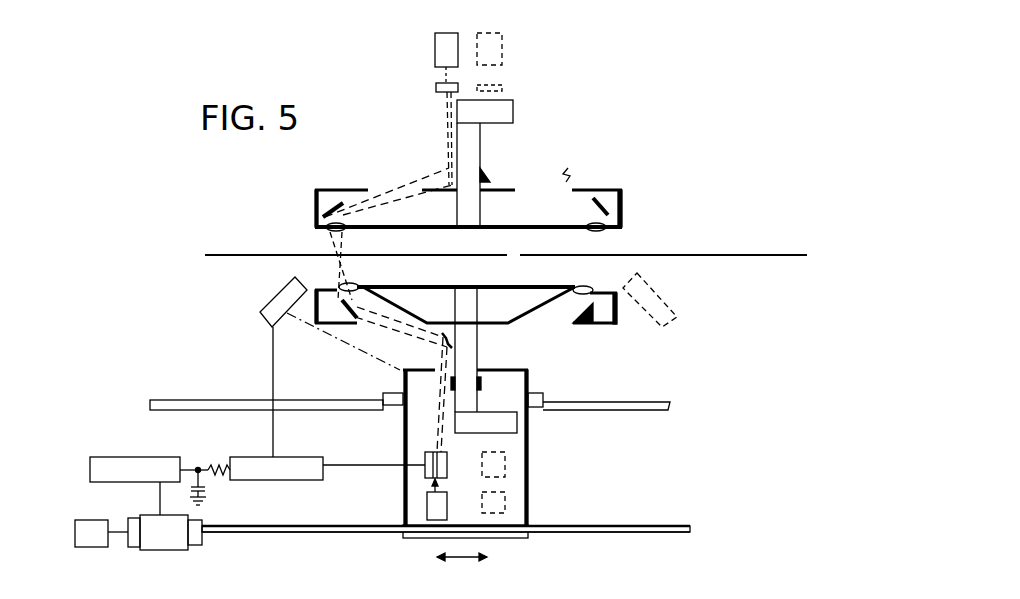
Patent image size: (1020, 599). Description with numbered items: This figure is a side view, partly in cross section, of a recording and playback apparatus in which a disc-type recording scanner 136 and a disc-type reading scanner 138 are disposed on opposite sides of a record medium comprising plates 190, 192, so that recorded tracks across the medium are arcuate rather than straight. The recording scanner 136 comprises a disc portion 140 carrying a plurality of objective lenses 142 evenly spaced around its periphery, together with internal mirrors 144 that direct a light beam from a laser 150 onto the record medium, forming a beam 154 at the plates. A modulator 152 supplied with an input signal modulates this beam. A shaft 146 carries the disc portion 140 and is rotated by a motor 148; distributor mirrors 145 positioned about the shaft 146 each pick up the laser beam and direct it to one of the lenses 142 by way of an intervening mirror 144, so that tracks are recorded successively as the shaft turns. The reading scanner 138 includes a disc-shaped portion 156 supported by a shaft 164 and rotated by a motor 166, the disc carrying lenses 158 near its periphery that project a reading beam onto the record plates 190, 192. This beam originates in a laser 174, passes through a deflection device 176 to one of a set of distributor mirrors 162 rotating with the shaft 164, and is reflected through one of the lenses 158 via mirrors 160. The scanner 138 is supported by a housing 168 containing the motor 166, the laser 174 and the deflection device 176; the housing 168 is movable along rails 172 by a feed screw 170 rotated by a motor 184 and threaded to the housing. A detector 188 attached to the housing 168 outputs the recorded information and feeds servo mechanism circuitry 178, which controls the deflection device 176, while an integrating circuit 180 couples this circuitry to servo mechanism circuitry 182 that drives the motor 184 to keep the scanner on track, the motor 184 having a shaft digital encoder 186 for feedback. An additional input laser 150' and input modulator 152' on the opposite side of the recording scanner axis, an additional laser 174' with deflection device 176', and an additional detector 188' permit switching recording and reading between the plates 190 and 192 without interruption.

The recording scanner 136 is at (610, 181).
The reading scanner 138 is at (660, 336).
The disc portion 140 is at (579, 160).
The objective lenses 142 is at (327, 236).
The internal mirrors 144 is at (328, 216).
The distributor mirrors 145 is at (434, 205).
The shaft 146 is at (479, 156).
The motor 148 is at (513, 108).
The laser 150 is at (416, 52).
The input laser 150' is at (528, 43).
The modulator 152 is at (416, 127).
The input modulator 152' is at (532, 80).
The beam 154 is at (340, 237).
The disc-shaped portion 156 is at (617, 312).
The lenses 158 is at (574, 288).
The mirrors 160 is at (345, 318).
The distributor mirrors 162 is at (480, 340).
The shaft 164 is at (471, 397).
The motor 166 is at (528, 432).
The housing 168 is at (505, 465).
The feed screw 170 is at (340, 536).
The rails 172 is at (245, 400).
The laser 174 is at (400, 499).
The additional laser 174' is at (540, 508).
The deflection device 176 is at (385, 454).
The deflection device 176' is at (540, 477).
The servo mechanism circuitry 178 is at (305, 441).
The integrating circuit 180 is at (210, 460).
The servo mechanism circuitry 182 is at (160, 457).
The motor 184 is at (202, 519).
The shaft digital encoder 186 is at (108, 520).
The detector 188 is at (307, 363).
The additional detector 188' is at (679, 296).
The record medium plate 190 is at (452, 256).
The record medium plate 192 is at (691, 255).